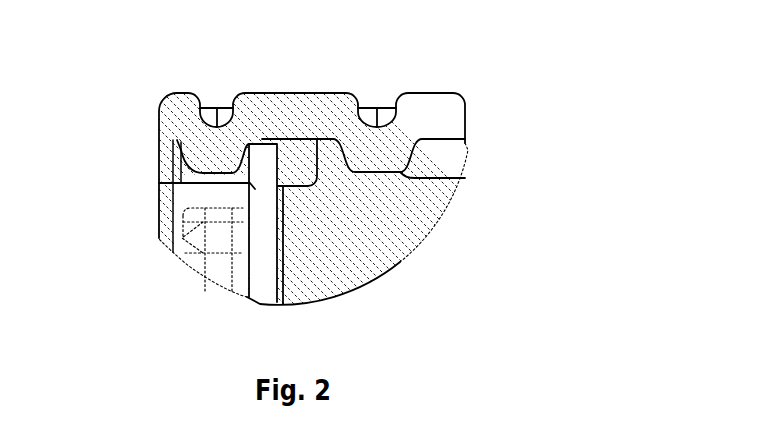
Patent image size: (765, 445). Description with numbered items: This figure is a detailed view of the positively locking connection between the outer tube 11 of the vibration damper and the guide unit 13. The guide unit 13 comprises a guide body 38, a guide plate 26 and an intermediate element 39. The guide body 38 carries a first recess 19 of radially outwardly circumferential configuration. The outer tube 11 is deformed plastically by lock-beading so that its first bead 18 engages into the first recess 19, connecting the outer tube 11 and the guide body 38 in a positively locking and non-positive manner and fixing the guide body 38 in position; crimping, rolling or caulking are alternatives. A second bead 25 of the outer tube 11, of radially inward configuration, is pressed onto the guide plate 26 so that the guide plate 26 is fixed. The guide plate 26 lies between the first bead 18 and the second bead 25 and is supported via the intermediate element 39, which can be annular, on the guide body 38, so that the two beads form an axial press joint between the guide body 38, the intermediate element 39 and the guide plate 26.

The outer tube 11 is at (460, 110).
The guide unit 13 is at (189, 300).
The first bead 18 is at (383, 153).
The first recess 19 is at (465, 178).
The second bead 25 is at (188, 156).
The guide plate 26 is at (163, 183).
The guide body 38 is at (414, 233).
The intermediate element 39 is at (290, 91).